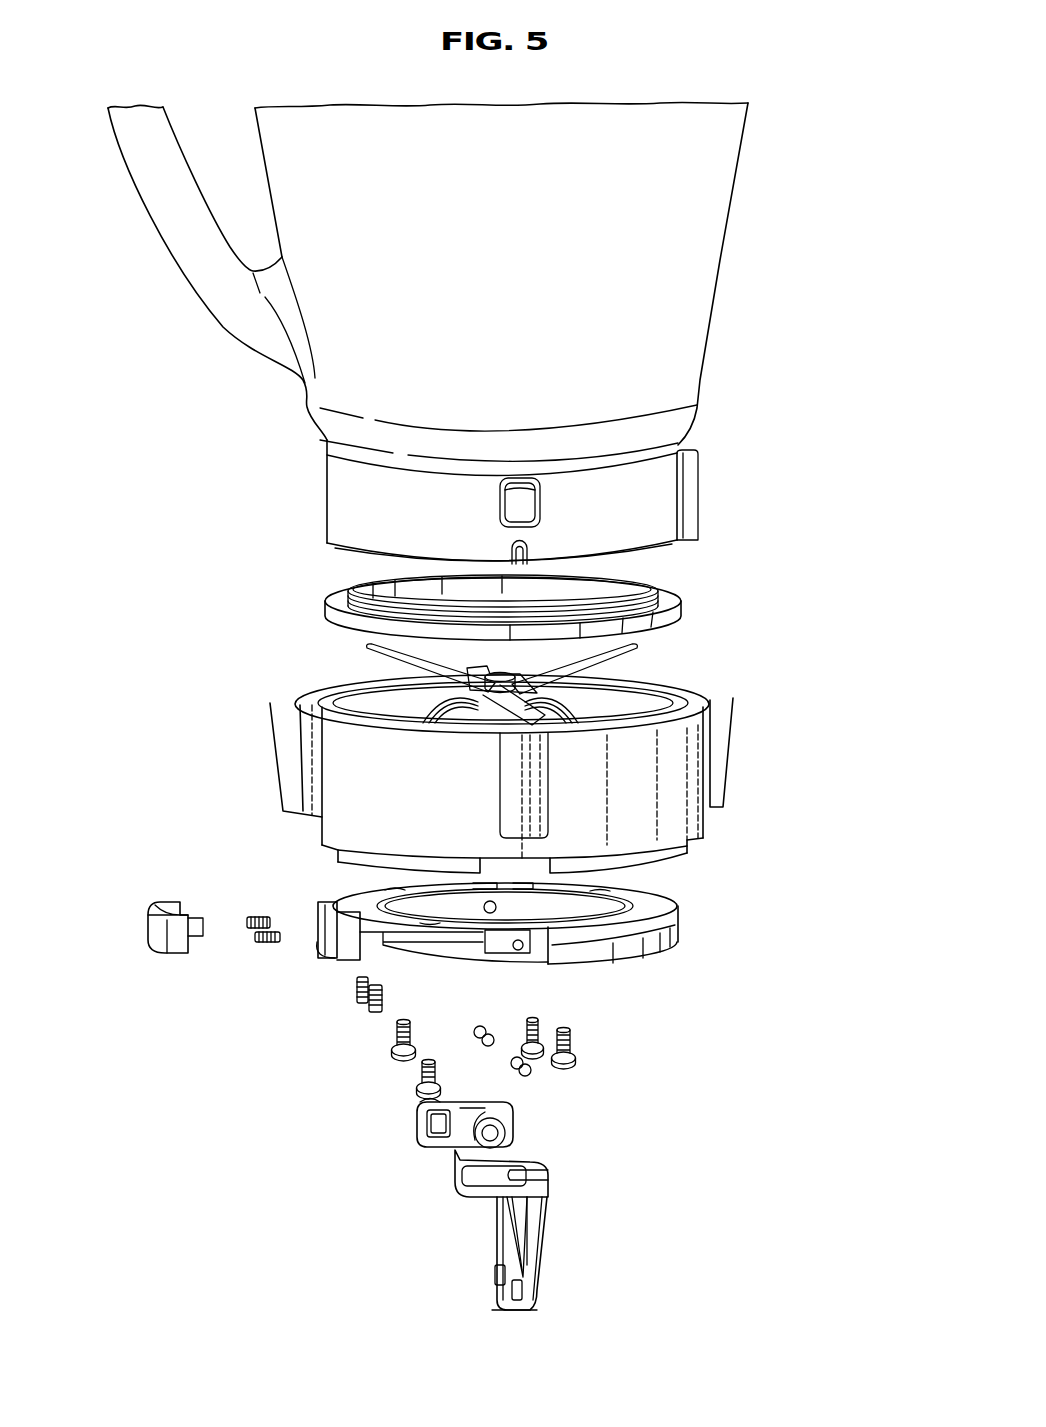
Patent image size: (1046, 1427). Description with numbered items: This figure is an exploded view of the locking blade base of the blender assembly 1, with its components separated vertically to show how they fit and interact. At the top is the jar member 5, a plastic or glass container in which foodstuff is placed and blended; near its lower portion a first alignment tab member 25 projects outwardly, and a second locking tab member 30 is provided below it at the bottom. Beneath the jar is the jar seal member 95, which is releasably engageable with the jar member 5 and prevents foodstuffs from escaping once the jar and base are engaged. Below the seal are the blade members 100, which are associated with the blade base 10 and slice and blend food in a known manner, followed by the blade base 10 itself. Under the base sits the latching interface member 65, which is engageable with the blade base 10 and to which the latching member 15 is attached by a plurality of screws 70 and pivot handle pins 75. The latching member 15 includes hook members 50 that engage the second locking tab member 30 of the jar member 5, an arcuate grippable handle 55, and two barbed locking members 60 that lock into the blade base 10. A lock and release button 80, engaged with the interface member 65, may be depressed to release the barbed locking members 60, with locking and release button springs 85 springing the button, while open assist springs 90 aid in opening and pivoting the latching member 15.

The blender assembly 1 is at (778, 72).
The jar member 5 is at (725, 278).
The blade base 10 is at (740, 732).
The latching member 15 is at (567, 1150).
The first alignment tab member 25 is at (527, 498).
The second locking tab member 30 is at (530, 548).
The hook members 50 is at (413, 1122).
The arcuate grippable handle 55 is at (543, 1255).
The barbed locking members 60 is at (500, 1297).
The latching interface member 65 is at (683, 913).
The screws 70 is at (420, 1085).
The pivot handle pins 75 is at (475, 1027).
The lock and release button 80 is at (150, 906).
The locking and release button springs 85 is at (257, 915).
The open assist springs 90 is at (374, 1012).
The jar seal member 95 is at (670, 603).
The blade members 100 is at (397, 672).